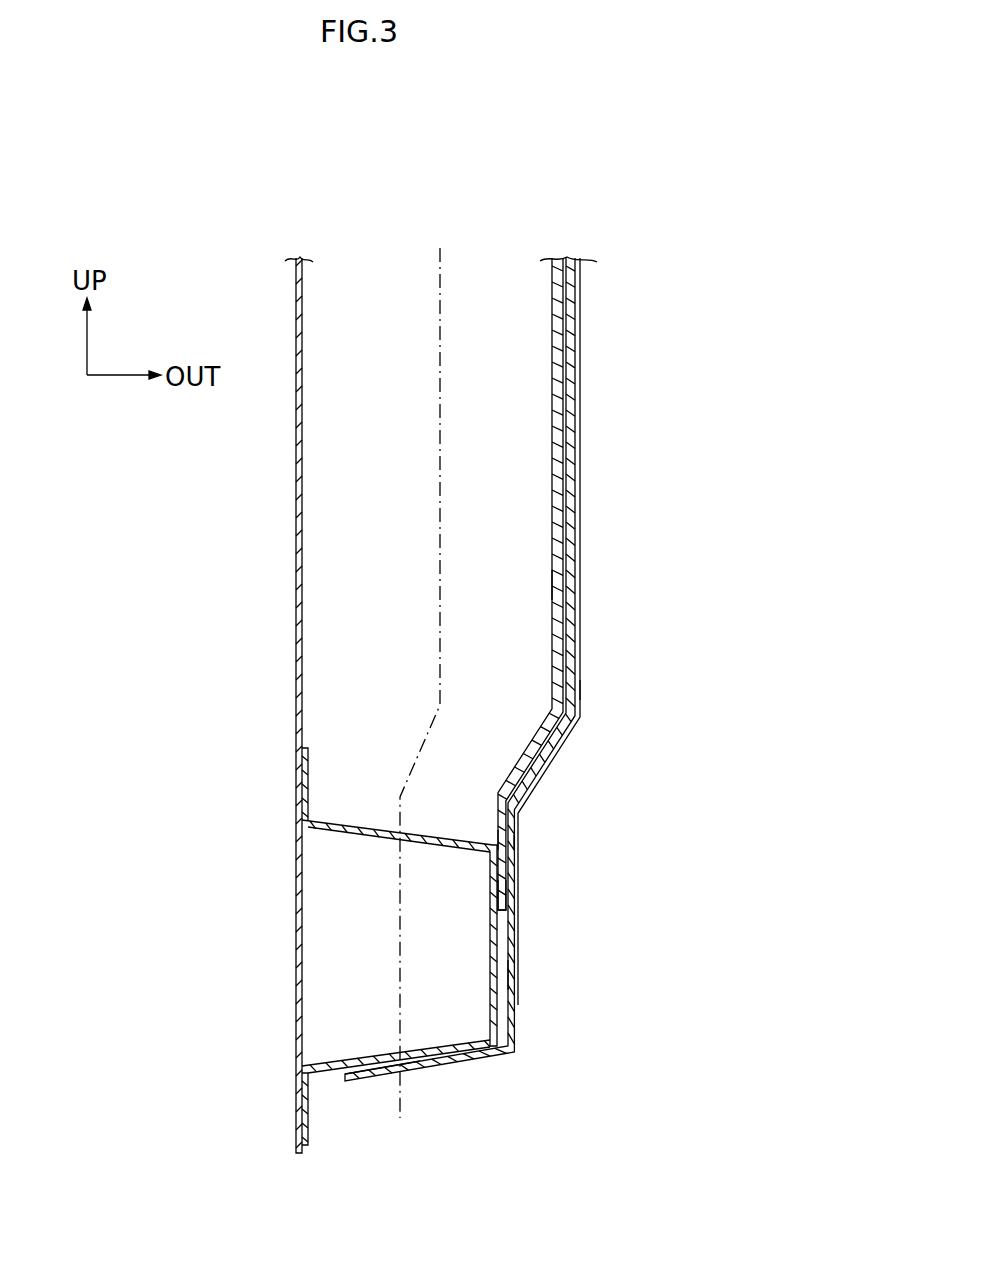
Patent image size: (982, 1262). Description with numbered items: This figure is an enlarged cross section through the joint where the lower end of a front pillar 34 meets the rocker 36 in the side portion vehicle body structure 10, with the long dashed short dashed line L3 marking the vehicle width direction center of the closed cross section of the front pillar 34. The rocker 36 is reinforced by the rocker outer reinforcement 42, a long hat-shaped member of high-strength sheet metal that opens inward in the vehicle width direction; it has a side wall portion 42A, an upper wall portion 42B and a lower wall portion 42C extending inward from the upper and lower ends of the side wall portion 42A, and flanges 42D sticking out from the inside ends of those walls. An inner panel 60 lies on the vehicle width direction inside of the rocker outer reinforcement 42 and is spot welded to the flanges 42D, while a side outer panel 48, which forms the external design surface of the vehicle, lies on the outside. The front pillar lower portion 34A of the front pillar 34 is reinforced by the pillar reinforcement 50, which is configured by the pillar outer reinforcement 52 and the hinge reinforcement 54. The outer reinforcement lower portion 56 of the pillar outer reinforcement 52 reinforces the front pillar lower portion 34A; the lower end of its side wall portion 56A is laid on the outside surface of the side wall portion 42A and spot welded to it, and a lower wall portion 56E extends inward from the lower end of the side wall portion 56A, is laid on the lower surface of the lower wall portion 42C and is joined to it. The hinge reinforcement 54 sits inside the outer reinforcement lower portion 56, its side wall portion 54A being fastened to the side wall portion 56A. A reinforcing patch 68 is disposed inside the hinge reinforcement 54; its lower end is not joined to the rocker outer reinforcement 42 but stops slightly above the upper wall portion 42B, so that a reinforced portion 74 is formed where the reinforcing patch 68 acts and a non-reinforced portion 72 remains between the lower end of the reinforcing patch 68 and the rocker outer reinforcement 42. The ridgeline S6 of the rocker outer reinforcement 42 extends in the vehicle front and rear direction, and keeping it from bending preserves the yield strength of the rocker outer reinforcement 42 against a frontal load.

The vehicle side structure 10 is at (687, 598).
The long dashed short dashed line L3 is at (437, 402).
The front pillar 34 is at (607, 521).
The front pillar lower portion 34A is at (690, 483).
The rocker 36 is at (540, 976).
The rocker outer reinforcement 42 is at (399, 926).
The side wall portion 42A is at (490, 925).
The upper wall portion 42B is at (347, 838).
The lower wall portion 42C is at (368, 1058).
The flange 42D is at (305, 778).
The side outer panel 48 is at (581, 687).
The pillar reinforcement 50 is at (569, 696).
The pillar outer reinforcement 52 is at (566, 696).
The hinge reinforcement 54 is at (552, 471).
The side wall portion 54A is at (497, 783).
The outer reinforcement lower portion 56 is at (582, 393).
The side wall portion 56A is at (506, 975).
The lower wall portion 56E is at (418, 1076).
The inner panel 60 is at (296, 578).
The reinforcing patch 68 is at (552, 580).
The non-reinforced portion 72 is at (498, 838).
The reinforced portion 74 is at (580, 562).
The ridgeline S6 is at (514, 842).